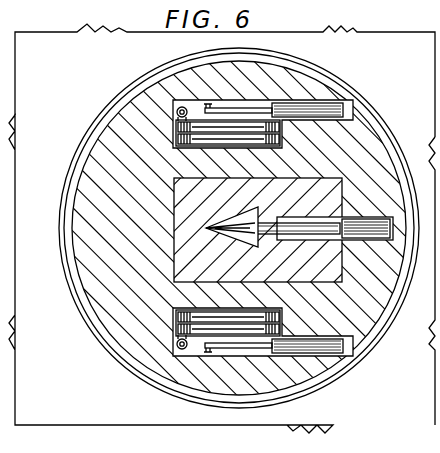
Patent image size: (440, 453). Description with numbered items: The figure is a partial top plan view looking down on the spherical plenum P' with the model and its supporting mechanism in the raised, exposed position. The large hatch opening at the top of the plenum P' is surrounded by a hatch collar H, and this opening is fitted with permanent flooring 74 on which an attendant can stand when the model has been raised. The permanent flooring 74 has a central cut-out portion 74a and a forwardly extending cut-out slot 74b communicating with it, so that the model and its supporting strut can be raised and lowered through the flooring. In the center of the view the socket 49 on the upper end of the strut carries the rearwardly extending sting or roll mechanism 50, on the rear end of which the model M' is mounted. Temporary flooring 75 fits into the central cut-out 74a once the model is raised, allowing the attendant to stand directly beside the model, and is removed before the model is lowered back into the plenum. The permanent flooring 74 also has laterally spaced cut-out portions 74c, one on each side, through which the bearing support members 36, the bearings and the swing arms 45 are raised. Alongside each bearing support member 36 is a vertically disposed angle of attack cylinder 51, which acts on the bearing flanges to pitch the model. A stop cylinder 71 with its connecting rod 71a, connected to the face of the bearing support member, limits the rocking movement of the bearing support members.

The permanent flooring 74 is at (138, 347).
The hatch collar H is at (368, 105).
The laterally spaced cut-out portions 74c is at (283, 134).
The swing arms 45 is at (218, 142).
The connecting rod 71a is at (238, 108).
The cylinder 71 is at (318, 104).
The bearing support members 36 is at (205, 104).
The angle of attack cylinders 51 is at (176, 110).
The central cut-out portion 74a is at (174, 222).
The forwardly extending cut-out slot 74b is at (367, 241).
The socket 49 is at (375, 217).
The sting or roll mechanism 50 is at (295, 237).
The temporary flooring 75 is at (325, 275).
The model M' is at (232, 223).
The plenum P' is at (383, 23).